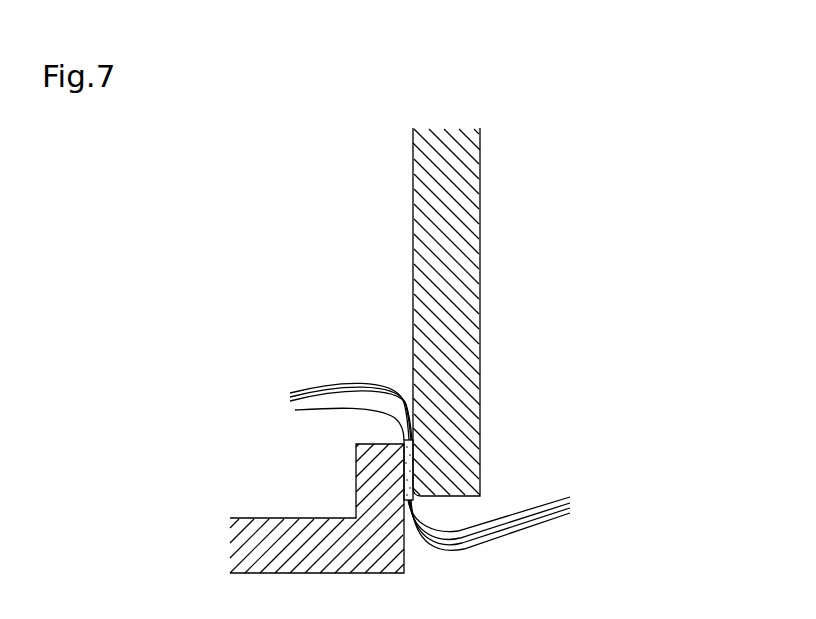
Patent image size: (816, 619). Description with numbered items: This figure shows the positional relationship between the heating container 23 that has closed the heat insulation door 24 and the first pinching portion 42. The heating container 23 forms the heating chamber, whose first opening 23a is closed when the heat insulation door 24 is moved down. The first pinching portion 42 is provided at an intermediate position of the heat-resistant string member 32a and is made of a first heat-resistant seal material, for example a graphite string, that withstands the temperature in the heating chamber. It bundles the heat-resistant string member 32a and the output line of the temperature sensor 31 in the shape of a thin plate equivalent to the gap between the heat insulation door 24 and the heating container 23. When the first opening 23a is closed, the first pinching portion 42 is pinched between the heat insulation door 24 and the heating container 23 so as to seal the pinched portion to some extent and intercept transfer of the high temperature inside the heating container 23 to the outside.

The heating container 23 is at (247, 530).
The first opening 23a is at (370, 253).
The heat insulation door 24 is at (475, 262).
The temperature sensor 31 is at (320, 383).
The heat-resistant string member 32a is at (327, 410).
The first pinching portion 42 is at (411, 460).